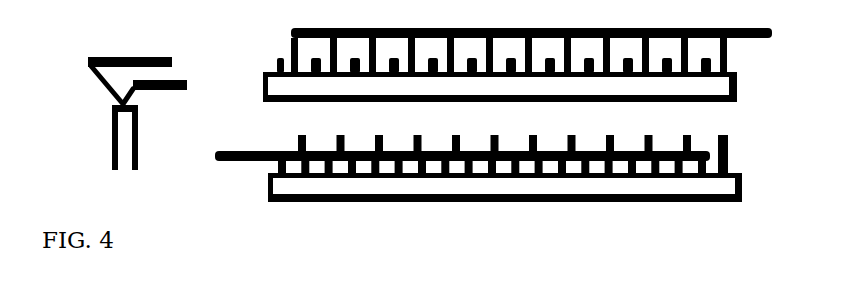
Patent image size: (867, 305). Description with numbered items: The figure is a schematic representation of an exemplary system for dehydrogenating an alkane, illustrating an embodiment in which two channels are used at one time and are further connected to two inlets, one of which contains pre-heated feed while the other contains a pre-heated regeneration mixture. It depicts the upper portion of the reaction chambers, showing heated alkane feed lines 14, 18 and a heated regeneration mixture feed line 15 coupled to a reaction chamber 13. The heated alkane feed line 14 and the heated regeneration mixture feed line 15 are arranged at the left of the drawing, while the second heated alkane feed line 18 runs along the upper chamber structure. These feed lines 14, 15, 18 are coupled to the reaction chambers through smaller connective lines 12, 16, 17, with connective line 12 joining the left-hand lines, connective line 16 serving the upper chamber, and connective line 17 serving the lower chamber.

The connective line 12 is at (103, 82).
The reaction chamber 13 is at (283, 188).
The heated alkane feed line 14 is at (132, 57).
The heated regeneration mixture feed line 15 is at (216, 155).
The connective line 16 is at (278, 58).
The connective line 17 is at (728, 152).
The heated alkane feed line 18 is at (758, 39).